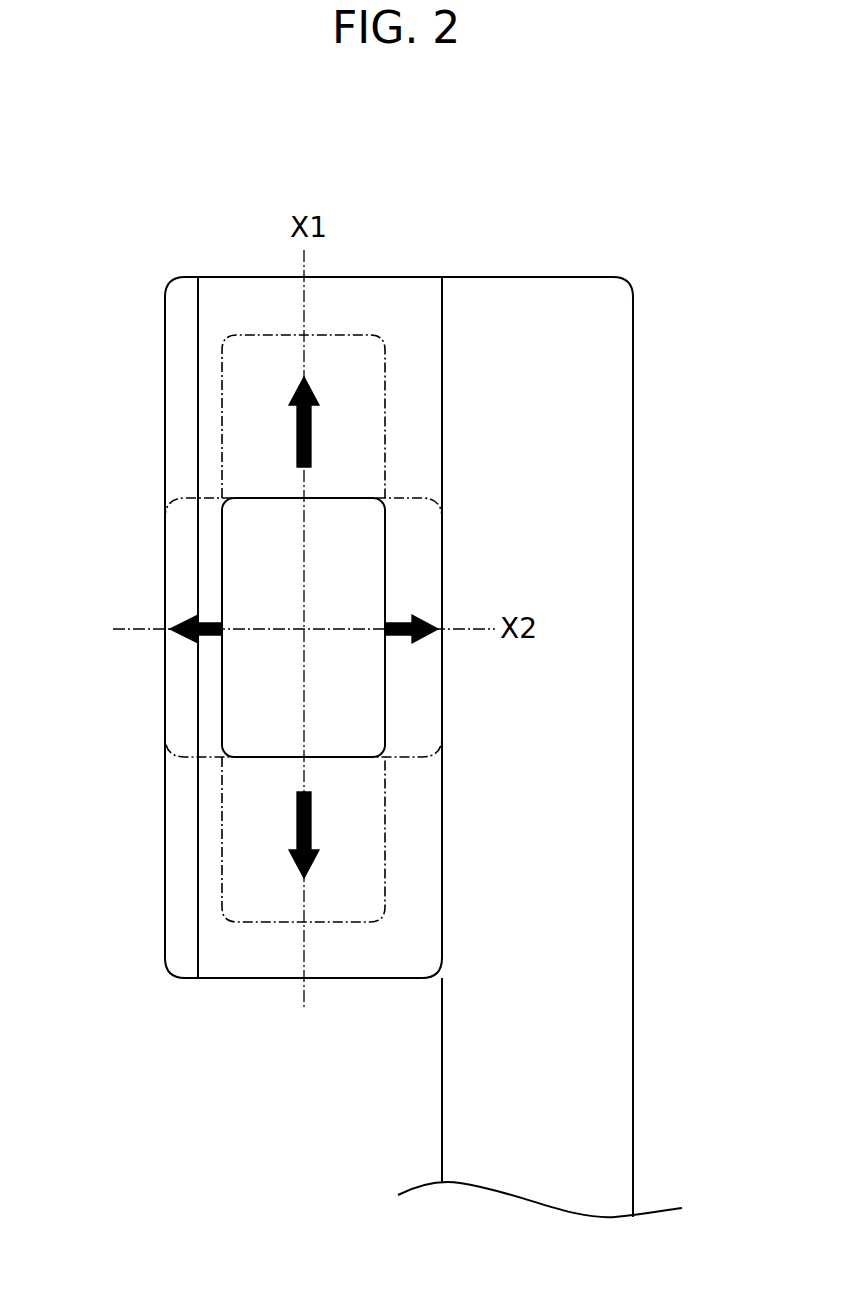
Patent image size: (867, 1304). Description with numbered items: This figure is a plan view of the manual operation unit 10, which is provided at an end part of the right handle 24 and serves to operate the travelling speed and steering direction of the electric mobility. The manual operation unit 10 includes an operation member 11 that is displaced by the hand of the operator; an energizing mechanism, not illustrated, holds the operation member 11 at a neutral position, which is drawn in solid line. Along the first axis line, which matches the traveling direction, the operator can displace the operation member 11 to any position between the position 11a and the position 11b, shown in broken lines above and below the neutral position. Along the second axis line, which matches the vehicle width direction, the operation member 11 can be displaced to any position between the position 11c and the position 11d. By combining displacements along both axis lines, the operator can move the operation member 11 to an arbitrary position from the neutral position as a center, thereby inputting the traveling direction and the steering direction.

The manual operation unit 10 is at (402, 190).
The operation member 11 is at (347, 505).
The position 11a is at (367, 333).
The position 11b is at (228, 918).
The position 11c is at (432, 494).
The position 11d is at (175, 492).
The handle 24 is at (605, 377).